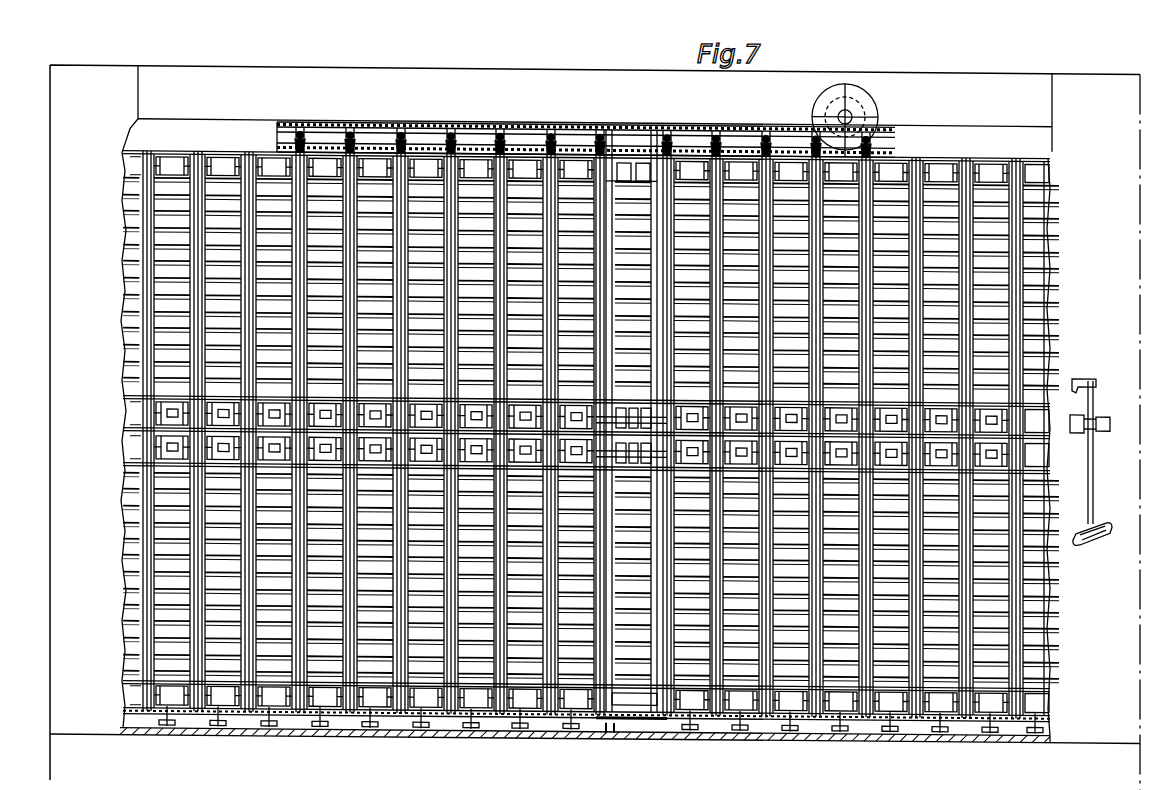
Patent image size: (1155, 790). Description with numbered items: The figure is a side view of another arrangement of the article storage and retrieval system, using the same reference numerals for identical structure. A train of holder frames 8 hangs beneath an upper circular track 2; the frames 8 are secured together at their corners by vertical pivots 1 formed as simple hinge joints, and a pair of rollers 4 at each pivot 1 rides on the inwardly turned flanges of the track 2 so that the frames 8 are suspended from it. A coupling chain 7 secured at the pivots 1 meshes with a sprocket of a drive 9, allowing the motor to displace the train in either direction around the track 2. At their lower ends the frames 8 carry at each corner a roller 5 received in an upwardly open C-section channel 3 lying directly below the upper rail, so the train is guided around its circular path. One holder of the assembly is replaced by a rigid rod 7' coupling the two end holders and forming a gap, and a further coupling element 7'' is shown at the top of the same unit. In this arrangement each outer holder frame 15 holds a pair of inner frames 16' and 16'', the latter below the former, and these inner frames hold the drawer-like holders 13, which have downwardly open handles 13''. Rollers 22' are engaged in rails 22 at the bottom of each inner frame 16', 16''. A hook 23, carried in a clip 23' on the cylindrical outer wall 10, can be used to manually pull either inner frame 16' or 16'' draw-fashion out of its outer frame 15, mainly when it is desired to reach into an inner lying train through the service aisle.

The vertical pivot 1 is at (204, 146).
The upper circular track 2 is at (455, 124).
The C-section channel 3 is at (718, 730).
The roller 4 is at (316, 122).
The roller 5 is at (830, 718).
The coupling chain 7 is at (586, 121).
The rigid rod 7' is at (627, 751).
The upper carriage of movable unit 7'' is at (614, 137).
The holder frame 8 is at (905, 712).
The drive 9 is at (822, 112).
The cylindrical outer wall 10 is at (1060, 128).
The drawer-like holder 13 is at (140, 430).
The storage bay with slats 13'' is at (798, 436).
The outer holder frame 15 is at (305, 292).
The upper inner frame 16' is at (576, 295).
The lower inner frame 16'' is at (580, 572).
The rail 22 is at (294, 746).
The roller 22' is at (594, 595).
The hook 23 is at (1087, 483).
The clip 23' is at (1104, 403).